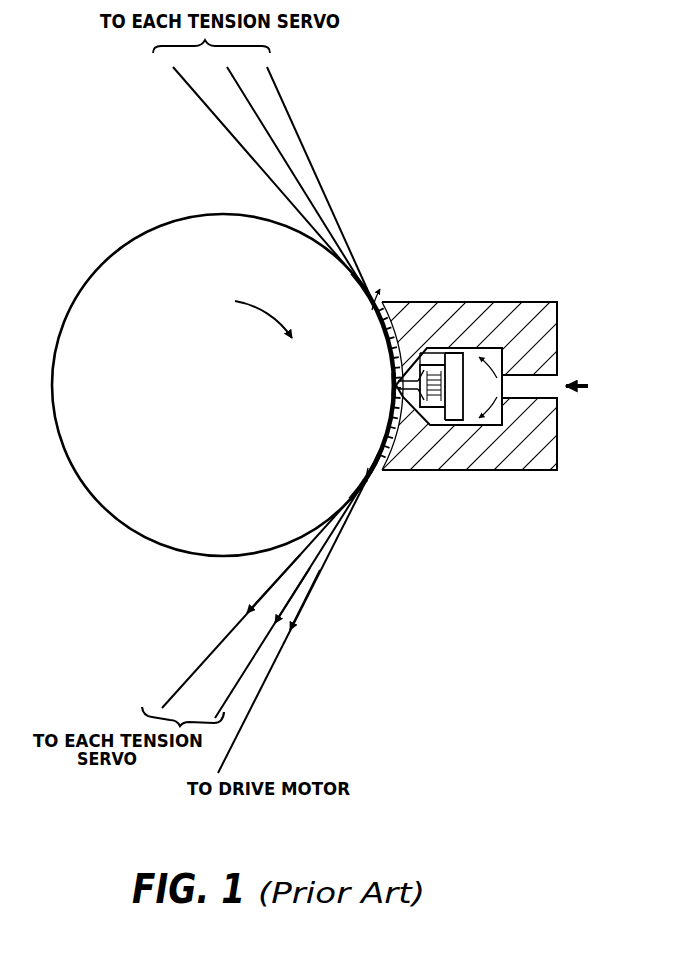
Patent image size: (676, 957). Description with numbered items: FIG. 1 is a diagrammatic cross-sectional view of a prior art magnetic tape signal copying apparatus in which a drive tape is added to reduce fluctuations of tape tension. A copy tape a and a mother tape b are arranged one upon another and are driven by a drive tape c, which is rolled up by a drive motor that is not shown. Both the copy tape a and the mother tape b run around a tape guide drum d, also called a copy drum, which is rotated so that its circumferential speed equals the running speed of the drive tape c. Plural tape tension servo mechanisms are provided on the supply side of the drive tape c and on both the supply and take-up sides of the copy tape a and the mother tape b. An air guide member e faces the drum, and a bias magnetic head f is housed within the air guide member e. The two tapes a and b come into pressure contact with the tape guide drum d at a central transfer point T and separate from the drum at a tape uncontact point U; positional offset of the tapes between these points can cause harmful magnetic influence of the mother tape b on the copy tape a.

The tape guide drum d is at (128, 508).
The air guide member e is at (557, 312).
The bias magnetic head f is at (440, 360).
The central transfer point T is at (386, 381).
The tape uncontact point U is at (373, 466).
The copy tape a is at (202, 655).
The mother tape b is at (240, 677).
The drive tape c is at (263, 680).